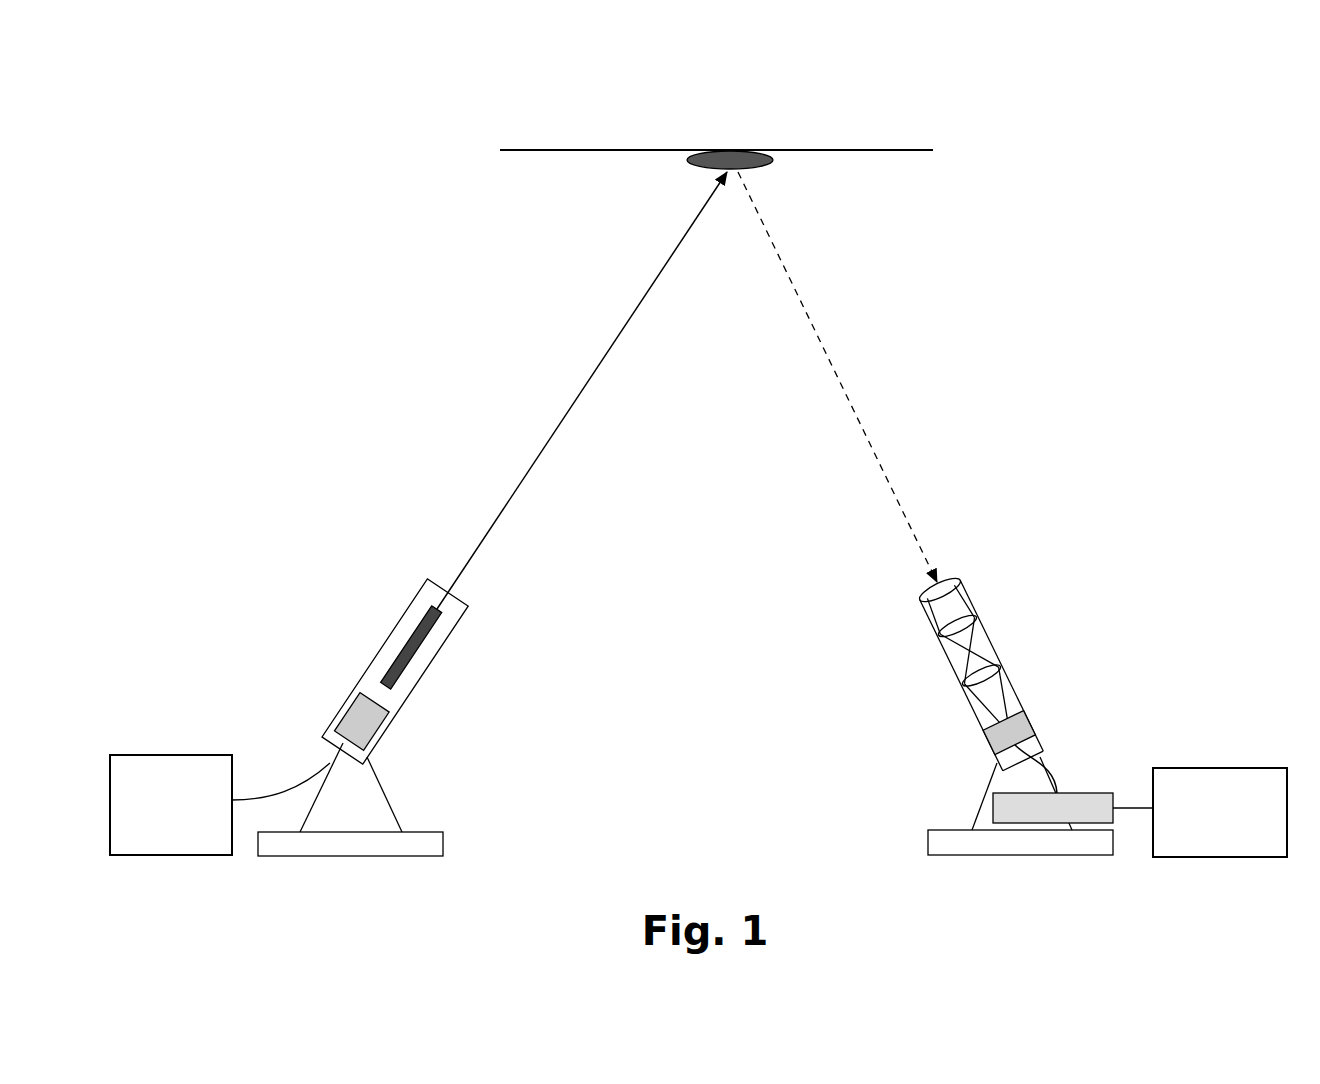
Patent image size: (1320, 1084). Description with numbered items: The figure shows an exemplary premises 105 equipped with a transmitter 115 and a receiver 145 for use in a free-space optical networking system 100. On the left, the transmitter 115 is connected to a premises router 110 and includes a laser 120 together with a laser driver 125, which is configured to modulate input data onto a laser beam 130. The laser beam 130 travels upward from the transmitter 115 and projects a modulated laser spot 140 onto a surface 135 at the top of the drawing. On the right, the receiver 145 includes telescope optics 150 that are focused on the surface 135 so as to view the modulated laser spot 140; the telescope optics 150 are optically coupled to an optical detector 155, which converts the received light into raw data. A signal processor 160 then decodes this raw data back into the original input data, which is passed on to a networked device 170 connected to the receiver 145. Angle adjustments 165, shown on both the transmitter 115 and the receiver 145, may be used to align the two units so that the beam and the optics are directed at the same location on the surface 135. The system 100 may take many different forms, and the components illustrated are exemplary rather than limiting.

The free-space optical networking system 100 is at (1166, 157).
The premises 105 is at (839, 144).
The premises router 110 is at (220, 805).
The transmitter 115 is at (390, 747).
The laser 120 is at (423, 660).
The laser driver 125 is at (378, 736).
The laser beam 130 is at (504, 532).
The surface 135 is at (652, 149).
The modulated laser spot 140 is at (772, 172).
The receiver 145 is at (956, 543).
The telescope optics 150 is at (934, 646).
The optical detector 155 is at (986, 741).
The signal processor 160 is at (1102, 779).
The angle adjustments 165 is at (1087, 600).
The networked device 170 is at (1200, 812).